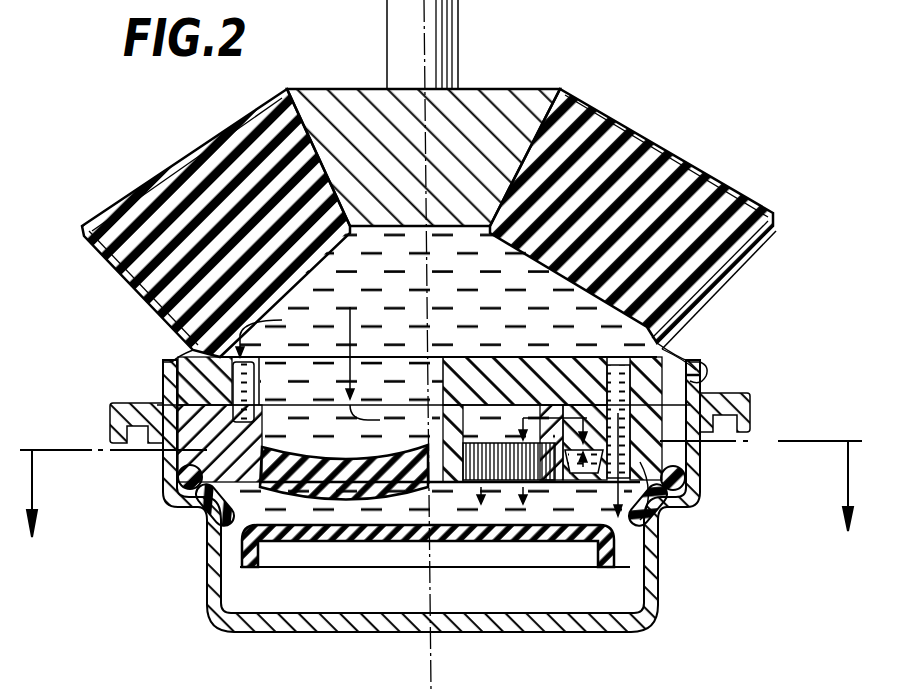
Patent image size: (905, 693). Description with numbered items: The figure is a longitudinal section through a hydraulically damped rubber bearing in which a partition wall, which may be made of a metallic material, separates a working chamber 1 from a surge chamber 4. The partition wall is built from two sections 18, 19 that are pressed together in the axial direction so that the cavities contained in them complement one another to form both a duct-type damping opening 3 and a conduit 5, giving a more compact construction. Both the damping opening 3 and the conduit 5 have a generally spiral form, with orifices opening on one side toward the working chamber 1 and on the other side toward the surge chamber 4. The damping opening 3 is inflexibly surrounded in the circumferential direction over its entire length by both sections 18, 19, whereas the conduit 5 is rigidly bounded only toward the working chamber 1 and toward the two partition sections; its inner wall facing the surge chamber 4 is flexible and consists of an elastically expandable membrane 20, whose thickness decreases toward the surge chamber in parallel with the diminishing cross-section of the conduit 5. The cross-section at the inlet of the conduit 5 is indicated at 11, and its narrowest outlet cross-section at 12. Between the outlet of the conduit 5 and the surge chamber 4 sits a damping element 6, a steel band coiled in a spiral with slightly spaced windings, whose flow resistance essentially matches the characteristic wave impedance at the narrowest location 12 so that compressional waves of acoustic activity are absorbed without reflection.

The working chamber 1 is at (321, 225).
The duct-type damping opening 3 is at (665, 362).
The surge chamber 4 is at (400, 505).
The conduit 5 is at (197, 510).
The damping element 6 is at (502, 498).
The cross-section at the inlet of the conduit 11 is at (351, 382).
The cross-section at the narrowest outlet location of the conduit 12 is at (677, 460).
The partition wall section 18 is at (703, 388).
The partition wall section 19 is at (665, 498).
The elastically expandable membrane 20 is at (207, 545).